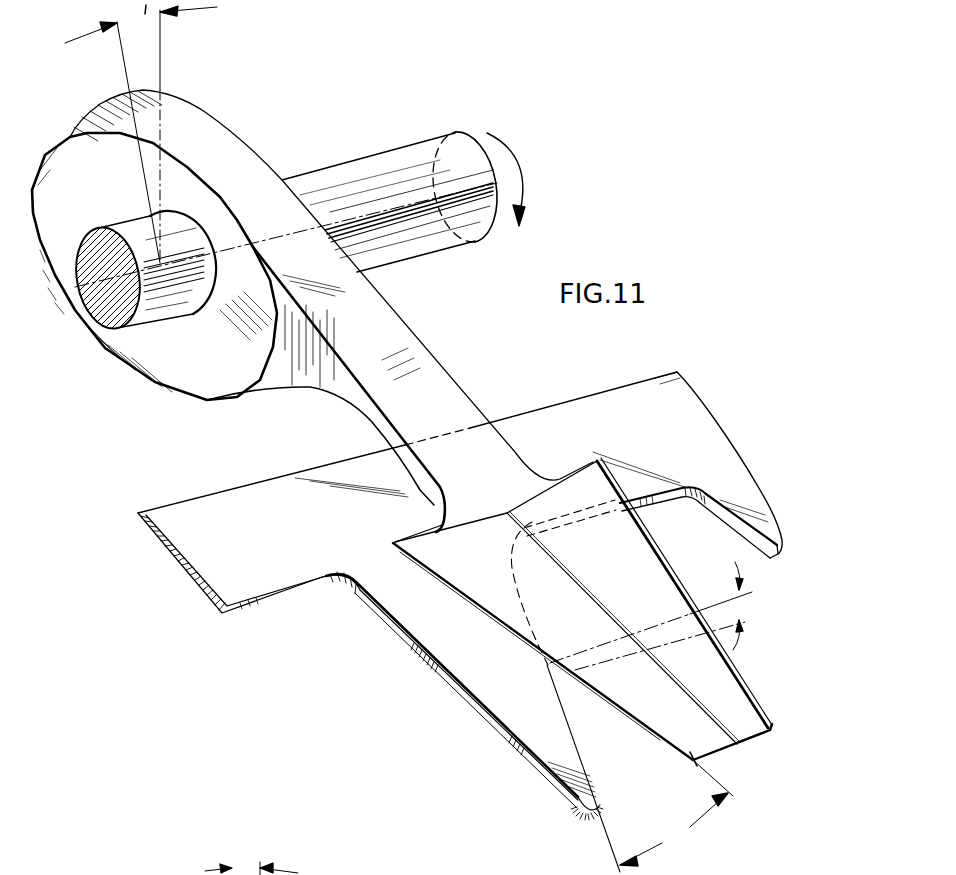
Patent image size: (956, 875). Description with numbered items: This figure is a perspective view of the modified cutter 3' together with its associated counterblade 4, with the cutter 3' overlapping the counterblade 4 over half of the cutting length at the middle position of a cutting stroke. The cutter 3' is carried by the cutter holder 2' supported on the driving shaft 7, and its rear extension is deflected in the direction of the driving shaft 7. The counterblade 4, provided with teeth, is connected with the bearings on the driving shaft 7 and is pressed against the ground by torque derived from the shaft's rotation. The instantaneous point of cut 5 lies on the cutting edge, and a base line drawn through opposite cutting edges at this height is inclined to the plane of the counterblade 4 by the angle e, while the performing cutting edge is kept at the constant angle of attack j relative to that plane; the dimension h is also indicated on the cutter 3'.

The driving shaft 7 is at (353, 177).
The cutter holder 2' is at (312, 272).
The cutter 3' is at (582, 599).
The counterblade 4 is at (400, 598).
The instantaneous point of cut 5 is at (550, 667).
The angle of attack j is at (742, 606).
The height h is at (676, 813).
The angle between base line and counterblade plane e is at (251, 866).